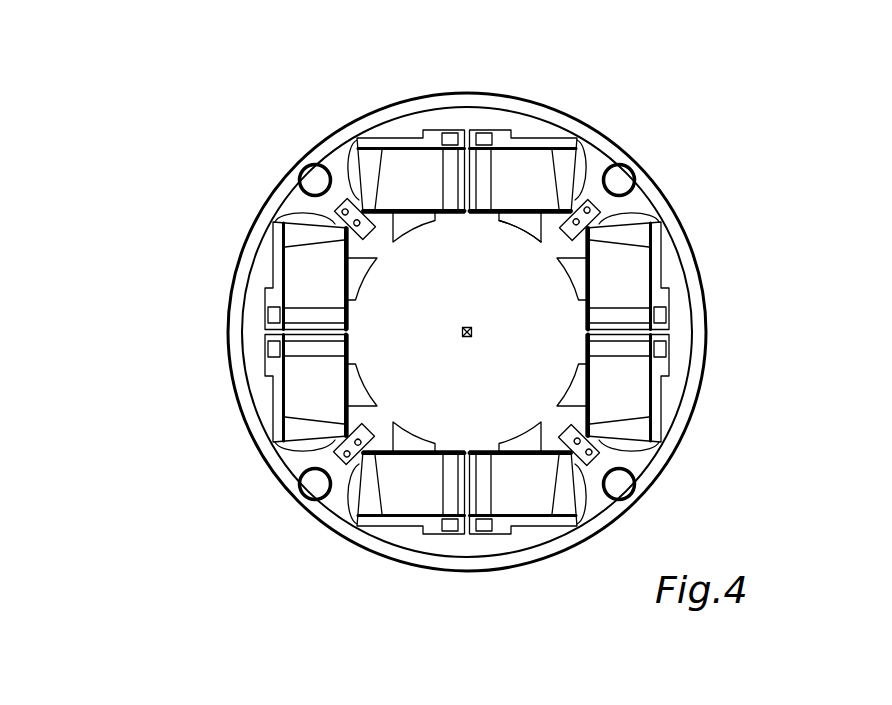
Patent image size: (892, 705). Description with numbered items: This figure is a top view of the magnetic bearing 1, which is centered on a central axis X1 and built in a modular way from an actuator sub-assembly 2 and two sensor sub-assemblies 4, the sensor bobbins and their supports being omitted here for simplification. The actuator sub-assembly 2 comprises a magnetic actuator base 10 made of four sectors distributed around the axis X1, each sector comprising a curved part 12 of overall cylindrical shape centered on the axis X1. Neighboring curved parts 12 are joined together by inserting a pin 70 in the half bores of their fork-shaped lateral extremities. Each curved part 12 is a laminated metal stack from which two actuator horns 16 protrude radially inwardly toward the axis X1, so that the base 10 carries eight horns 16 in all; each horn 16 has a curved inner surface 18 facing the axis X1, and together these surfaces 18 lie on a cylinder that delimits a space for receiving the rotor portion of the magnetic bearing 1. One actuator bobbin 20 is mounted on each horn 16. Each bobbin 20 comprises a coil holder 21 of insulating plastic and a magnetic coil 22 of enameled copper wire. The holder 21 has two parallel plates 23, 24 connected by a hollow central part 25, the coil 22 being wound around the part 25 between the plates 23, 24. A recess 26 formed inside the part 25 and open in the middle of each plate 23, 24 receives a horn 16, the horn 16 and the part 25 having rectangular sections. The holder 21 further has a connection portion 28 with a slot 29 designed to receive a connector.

The magnetic bearing 1 is at (423, 311).
The actuator sub-assembly 2 is at (463, 332).
The sensor sub-assembly 4 is at (680, 237).
The magnetic actuator base 10 is at (447, 331).
The curved part 12 is at (278, 308).
The actuator horn 16 is at (512, 223).
The curved inner surface 18 is at (526, 241).
The actuator bobbin 20 is at (190, 527).
The coil holder 21 is at (221, 278).
The magnetic coil 22 is at (310, 430).
The plate 23 is at (283, 433).
The plate 24 is at (350, 345).
The hollow central part 25 is at (318, 393).
The recess 26 is at (355, 382).
The connection portion 28 is at (267, 372).
The slot 29 is at (265, 347).
The pin 70 is at (619, 180).
The central axis X1 is at (482, 341).